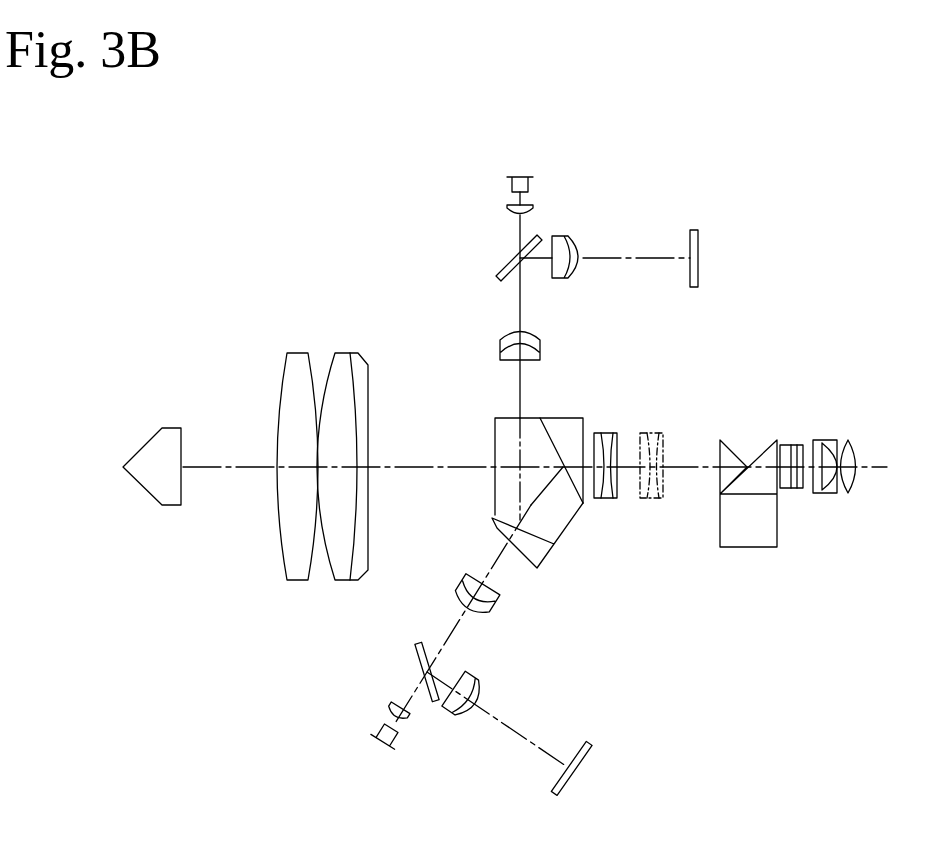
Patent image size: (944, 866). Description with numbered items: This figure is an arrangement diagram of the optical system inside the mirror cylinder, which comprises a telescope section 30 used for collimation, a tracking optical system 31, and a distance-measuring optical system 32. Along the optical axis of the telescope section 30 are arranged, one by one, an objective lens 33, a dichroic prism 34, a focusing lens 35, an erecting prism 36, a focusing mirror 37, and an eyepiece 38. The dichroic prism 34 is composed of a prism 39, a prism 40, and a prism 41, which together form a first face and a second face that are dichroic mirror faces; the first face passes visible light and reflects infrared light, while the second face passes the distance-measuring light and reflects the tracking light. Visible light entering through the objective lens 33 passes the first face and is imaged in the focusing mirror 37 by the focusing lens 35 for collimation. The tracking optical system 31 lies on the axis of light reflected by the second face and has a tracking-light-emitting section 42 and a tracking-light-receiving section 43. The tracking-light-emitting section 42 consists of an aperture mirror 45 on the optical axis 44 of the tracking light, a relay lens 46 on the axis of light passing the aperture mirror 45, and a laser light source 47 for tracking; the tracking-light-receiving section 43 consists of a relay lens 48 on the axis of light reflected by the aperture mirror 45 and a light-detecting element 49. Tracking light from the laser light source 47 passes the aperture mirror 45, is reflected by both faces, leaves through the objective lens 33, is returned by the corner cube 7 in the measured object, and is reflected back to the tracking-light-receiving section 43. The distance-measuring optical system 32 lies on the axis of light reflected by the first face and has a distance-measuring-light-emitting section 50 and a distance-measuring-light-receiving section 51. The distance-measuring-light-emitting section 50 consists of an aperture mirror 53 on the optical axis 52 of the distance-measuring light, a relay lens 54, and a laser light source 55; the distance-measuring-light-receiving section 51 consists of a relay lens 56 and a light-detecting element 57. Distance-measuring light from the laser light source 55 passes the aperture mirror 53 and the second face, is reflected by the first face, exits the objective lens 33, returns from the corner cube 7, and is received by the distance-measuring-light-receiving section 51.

The corner cube 7 is at (162, 456).
The telescope section 30 is at (793, 475).
The tracking optical system 31 is at (522, 246).
The distance-measuring optical system 32 is at (480, 676).
The objective lens 33 is at (316, 340).
The dichroic prism 34 is at (513, 477).
The focusing lens 35 is at (605, 432).
The erecting prism 36 is at (767, 443).
The focusing mirror 37 is at (790, 448).
The eyepiece 38 is at (840, 435).
The prism 39 is at (507, 455).
The prism 40 is at (560, 433).
The prism 41 is at (540, 553).
The tracking-light-emitting section 42 is at (464, 188).
The tracking-light-receiving section 43 is at (742, 218).
The optical axis of the tracking light 44 is at (518, 313).
The aperture mirror 45 is at (505, 265).
The relay lens 46 is at (507, 208).
The laser light source 47 is at (512, 183).
The relay lens 48 is at (578, 273).
The light-detecting element 49 is at (698, 275).
The distance-measuring-light-emitting section 50 is at (348, 722).
The distance-measuring-light-receiving section 51 is at (558, 716).
The optical axis of the distance-measuring light 52 is at (486, 578).
The aperture mirror 53 is at (415, 648).
The relay lens 54 is at (392, 707).
The laser light source 55 is at (380, 745).
The relay lens 56 is at (480, 688).
The light-detecting element 57 is at (573, 770).